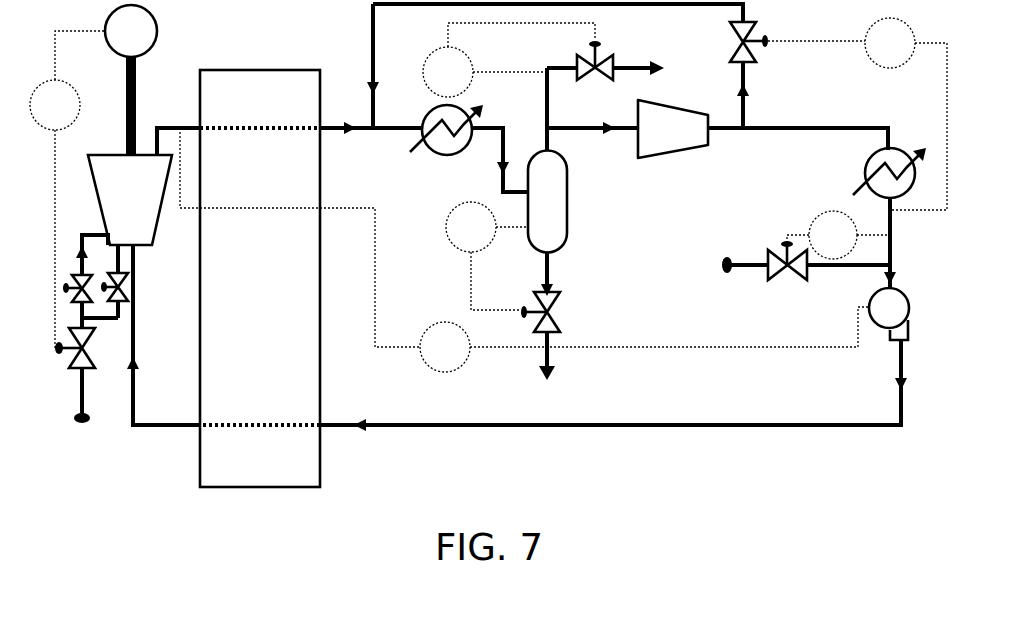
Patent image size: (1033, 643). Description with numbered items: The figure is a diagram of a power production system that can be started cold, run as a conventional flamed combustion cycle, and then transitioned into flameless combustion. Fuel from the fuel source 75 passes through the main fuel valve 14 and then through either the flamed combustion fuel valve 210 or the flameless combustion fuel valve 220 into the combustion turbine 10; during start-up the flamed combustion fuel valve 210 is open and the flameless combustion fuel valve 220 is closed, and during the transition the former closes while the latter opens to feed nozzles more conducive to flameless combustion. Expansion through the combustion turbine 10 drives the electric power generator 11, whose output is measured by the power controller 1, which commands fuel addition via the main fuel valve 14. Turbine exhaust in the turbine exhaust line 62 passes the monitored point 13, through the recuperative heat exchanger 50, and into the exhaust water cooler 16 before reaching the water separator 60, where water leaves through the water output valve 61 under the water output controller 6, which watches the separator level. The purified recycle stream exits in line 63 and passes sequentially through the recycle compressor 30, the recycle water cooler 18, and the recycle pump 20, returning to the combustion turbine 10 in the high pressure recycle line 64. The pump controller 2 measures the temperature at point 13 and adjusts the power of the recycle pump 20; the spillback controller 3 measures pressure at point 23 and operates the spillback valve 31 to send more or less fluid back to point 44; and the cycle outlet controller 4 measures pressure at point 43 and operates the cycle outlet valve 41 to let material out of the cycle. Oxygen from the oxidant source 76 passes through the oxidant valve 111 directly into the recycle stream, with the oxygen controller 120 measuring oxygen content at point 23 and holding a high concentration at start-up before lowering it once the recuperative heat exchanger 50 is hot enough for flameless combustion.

The power controller 1 is at (67, 189).
The pump controller 2 is at (524, 250).
The spillback controller 3 is at (857, 114).
The cycle outlet controller 4 is at (509, 60).
The water output controller 6 is at (487, 256).
The combustion turbine 10 is at (130, 200).
The electric power generator 11 is at (131, 31).
The point 13 is at (289, 131).
The main fuel valve 14 is at (83, 368).
The exhaust water cooler 16 is at (446, 140).
The recycle water cooler 18 is at (817, 163).
The recycle pump 20 is at (889, 314).
The point 23 is at (877, 242).
The recycle compressor 30 is at (627, 129).
The spillback valve 31 is at (570, 66).
The cycle outlet valve 41 is at (605, 69).
The point 43 is at (509, 130).
The point 44 is at (370, 78).
The recuperative heat exchanger 50 is at (260, 278).
The water separator 60 is at (547, 202).
The water output valve 61 is at (550, 316).
The turbine exhaust line 62 is at (155, 148).
The line 63 is at (552, 135).
The high pressure recycle line 64 is at (473, 422).
The fuel source 75 is at (82, 425).
The oxidant source 76 is at (725, 275).
The oxidant valve 111 is at (808, 268).
The oxygen controller 120 is at (838, 235).
The flamed combustion fuel valve 210 is at (66, 288).
The flameless combustion fuel valve 220 is at (125, 290).